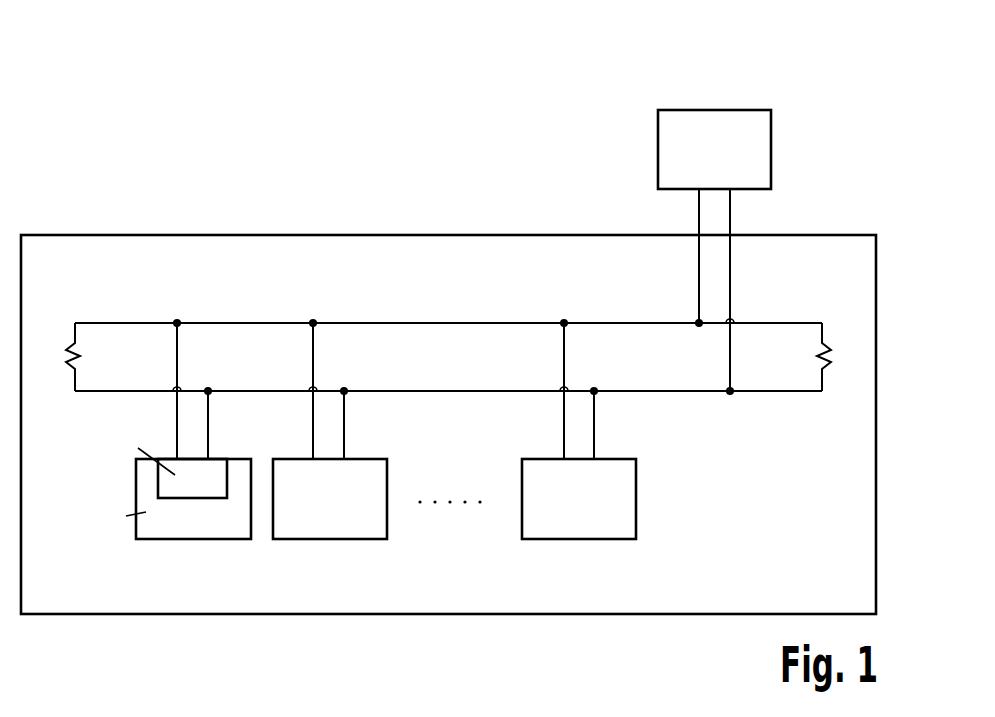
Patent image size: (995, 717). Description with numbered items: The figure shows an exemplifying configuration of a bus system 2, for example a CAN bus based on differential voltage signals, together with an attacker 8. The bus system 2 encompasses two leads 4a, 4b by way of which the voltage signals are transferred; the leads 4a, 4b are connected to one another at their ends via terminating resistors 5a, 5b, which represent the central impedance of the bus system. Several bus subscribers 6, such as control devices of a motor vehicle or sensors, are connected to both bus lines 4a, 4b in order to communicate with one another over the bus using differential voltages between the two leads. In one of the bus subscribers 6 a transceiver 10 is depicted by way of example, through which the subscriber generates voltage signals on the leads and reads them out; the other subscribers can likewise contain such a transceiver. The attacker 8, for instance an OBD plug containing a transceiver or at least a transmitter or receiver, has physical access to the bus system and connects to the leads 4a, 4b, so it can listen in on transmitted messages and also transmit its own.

The bus system 2 is at (94, 235).
The lead 4a is at (437, 323).
The lead 4b is at (447, 391).
The terminating resistor 5a is at (77, 362).
The terminating resistor 5b is at (820, 361).
The bus subscriber 6 is at (343, 464).
The attacker 8 is at (715, 110).
The transceiver 10 is at (212, 499).